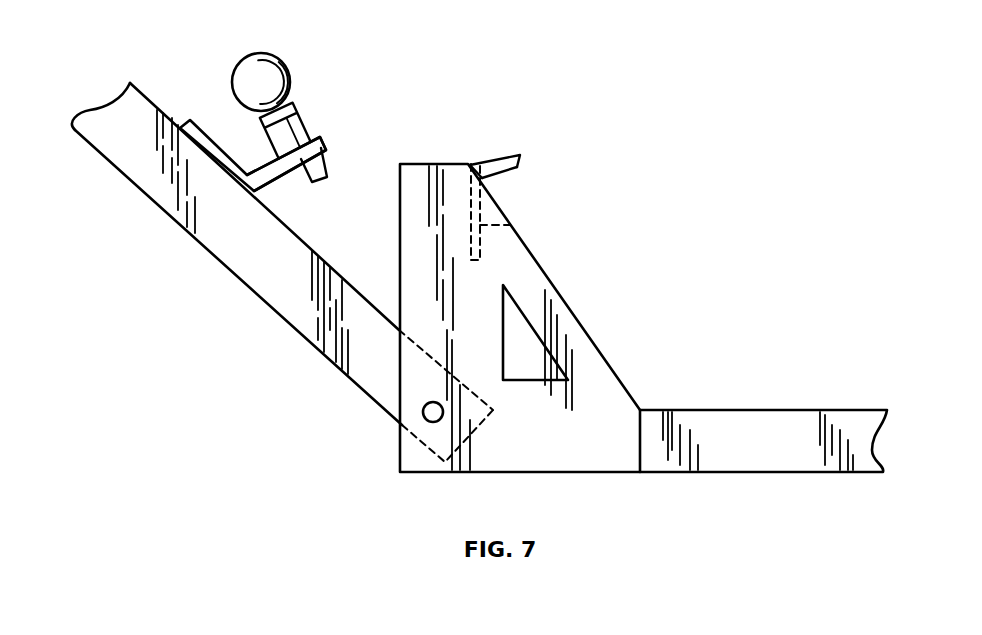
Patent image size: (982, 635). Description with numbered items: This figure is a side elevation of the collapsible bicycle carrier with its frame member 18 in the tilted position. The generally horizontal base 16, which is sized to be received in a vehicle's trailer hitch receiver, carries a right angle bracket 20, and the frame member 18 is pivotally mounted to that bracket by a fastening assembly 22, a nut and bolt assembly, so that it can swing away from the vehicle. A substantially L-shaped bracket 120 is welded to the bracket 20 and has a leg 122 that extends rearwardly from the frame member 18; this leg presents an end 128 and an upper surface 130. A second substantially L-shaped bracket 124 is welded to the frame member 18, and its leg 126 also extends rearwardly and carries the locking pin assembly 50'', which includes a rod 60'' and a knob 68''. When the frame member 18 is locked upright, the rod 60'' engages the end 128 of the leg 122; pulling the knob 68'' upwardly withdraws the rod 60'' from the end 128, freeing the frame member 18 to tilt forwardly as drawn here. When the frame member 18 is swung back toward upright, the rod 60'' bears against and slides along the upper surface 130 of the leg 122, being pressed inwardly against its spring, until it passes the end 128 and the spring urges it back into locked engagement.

The horizontal base 16 is at (833, 420).
The frame member 18 is at (160, 193).
The bracket 20 is at (512, 266).
The fastening assembly 22 is at (425, 420).
The locking pin assembly 50'' is at (282, 123).
The rod 60'' is at (338, 142).
The knob 68'' is at (295, 61).
The L-shaped bracket 120 is at (510, 225).
The leg 122 is at (482, 178).
The L-shaped bracket 124 is at (242, 133).
The leg 126 is at (282, 174).
The end 128 is at (517, 167).
The upper surface 130 is at (511, 155).